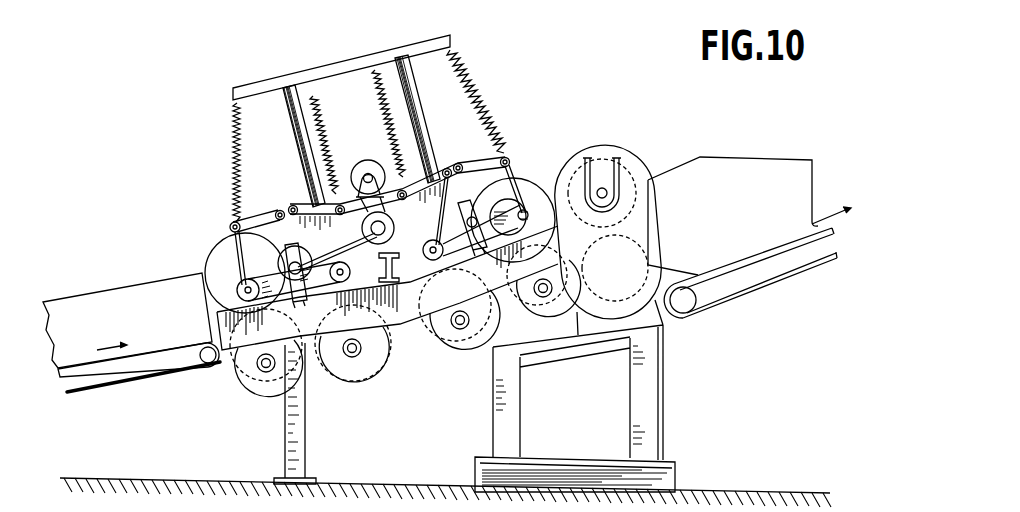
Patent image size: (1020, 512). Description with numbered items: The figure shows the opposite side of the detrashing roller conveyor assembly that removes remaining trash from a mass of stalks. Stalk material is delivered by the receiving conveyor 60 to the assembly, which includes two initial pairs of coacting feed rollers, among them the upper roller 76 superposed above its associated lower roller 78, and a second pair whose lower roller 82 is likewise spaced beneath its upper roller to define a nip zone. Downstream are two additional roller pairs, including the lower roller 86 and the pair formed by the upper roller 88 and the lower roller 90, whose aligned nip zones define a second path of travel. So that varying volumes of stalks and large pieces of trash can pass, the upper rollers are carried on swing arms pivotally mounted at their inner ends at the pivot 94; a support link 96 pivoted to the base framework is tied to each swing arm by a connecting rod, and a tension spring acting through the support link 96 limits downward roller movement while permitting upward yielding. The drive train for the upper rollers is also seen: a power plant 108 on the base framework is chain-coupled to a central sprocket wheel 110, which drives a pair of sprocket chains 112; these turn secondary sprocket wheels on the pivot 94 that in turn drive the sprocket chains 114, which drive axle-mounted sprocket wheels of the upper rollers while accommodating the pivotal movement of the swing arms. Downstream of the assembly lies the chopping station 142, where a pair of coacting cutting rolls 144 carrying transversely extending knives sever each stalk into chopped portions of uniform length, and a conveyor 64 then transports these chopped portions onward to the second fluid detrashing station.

The receiving conveyor 60 is at (167, 353).
The conveyor 64 is at (767, 293).
The upper feed roller 76 is at (220, 270).
The lower feed roller 78 is at (262, 393).
The lower feed roller 82 is at (352, 377).
The lower feed roller 86 is at (465, 352).
The upper feed roller 88 is at (538, 200).
The lower feed roller 90 is at (533, 315).
The pivot 94 is at (507, 170).
The support link 96 is at (263, 210).
The power plant 108 is at (368, 160).
The central sprocket wheel 110 is at (410, 286).
The sprocket chains 112 is at (430, 177).
The sprocket chains 114 is at (282, 256).
The chopping station 142 is at (613, 130).
The cutting rolls 144 is at (630, 167).